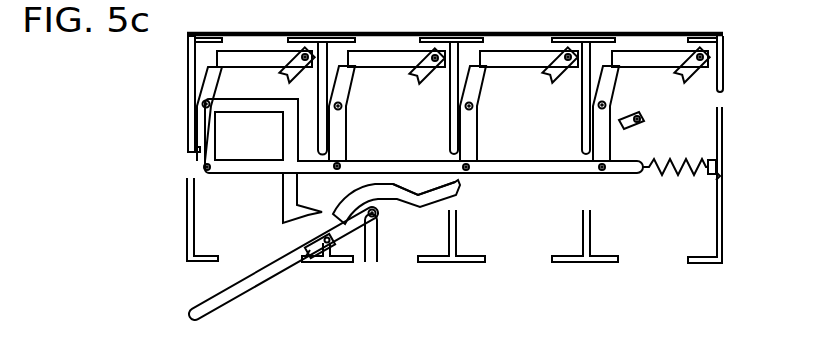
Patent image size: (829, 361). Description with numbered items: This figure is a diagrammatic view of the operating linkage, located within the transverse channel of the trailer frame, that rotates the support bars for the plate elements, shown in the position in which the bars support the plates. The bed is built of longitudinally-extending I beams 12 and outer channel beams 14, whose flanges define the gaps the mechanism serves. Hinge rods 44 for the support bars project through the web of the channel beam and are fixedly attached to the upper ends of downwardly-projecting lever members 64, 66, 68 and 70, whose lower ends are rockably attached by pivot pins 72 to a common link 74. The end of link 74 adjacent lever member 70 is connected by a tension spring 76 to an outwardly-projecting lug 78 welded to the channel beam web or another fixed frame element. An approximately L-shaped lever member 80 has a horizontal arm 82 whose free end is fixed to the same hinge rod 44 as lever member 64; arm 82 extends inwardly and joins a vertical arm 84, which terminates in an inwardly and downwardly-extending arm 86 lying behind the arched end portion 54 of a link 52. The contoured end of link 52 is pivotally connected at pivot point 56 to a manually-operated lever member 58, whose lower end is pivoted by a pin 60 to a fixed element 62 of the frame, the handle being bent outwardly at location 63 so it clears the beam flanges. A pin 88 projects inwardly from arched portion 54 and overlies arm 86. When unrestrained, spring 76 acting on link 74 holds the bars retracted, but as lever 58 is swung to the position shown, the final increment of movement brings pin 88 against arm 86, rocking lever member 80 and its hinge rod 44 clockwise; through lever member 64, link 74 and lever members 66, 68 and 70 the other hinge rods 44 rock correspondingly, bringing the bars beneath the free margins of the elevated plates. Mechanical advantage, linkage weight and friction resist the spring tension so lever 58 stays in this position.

The I beams 12 is at (589, 237).
The outer channel beams 14 is at (722, 137).
The hinge rods 44 is at (202, 103).
The link 52 is at (630, 114).
The end portion 54 is at (401, 196).
The pivot point 56 is at (327, 245).
The lever member 58 is at (221, 302).
The pin 60 is at (378, 218).
The fixed element 62 is at (373, 256).
The location 63 is at (300, 255).
The lever member 64 is at (201, 134).
The lever member 66 is at (338, 127).
The lever member 68 is at (468, 128).
The lever member 70 is at (596, 142).
The pivot pins 72 is at (202, 164).
The common link 74 is at (510, 168).
The tension spring 76 is at (660, 156).
The lug 78 is at (712, 156).
The lever member 80 is at (293, 144).
The horizontal arm 82 is at (237, 99).
The vertical arm 84 is at (295, 124).
The arm 86 is at (305, 216).
The pin 88 is at (338, 210).